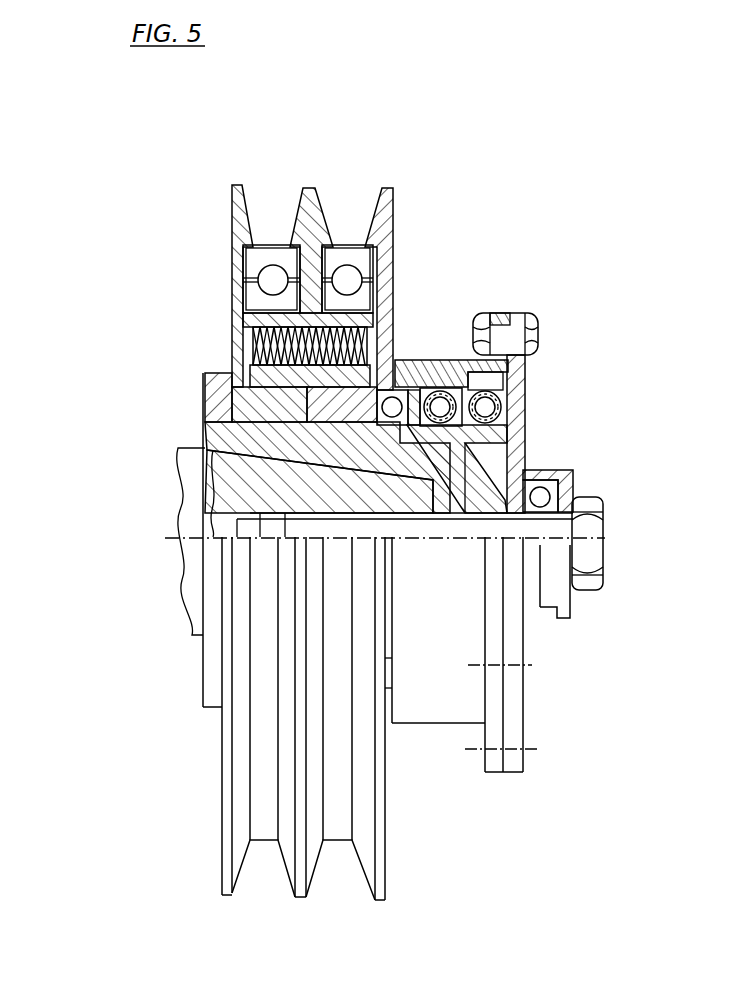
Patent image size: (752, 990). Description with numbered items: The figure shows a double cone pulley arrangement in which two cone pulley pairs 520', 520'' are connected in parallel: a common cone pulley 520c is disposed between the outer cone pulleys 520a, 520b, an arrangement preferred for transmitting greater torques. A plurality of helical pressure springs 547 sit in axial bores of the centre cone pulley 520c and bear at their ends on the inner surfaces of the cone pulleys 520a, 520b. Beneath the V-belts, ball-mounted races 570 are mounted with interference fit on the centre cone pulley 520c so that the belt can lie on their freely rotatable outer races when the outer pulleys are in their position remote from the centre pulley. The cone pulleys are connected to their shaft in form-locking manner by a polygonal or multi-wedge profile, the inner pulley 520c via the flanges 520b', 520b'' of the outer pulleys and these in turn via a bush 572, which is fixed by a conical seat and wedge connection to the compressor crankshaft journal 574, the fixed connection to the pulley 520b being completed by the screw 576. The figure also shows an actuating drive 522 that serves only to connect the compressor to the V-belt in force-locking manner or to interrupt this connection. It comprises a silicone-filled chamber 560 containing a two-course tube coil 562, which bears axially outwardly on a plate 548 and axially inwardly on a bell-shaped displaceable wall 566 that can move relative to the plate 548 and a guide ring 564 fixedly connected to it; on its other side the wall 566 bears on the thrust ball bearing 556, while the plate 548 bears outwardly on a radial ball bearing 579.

The cone pulley pair 520' is at (252, 155).
The common cone pulley 520c is at (312, 193).
The cone pulley pair 520'' is at (381, 155).
The outer cone pulley 520b is at (151, 278).
The outer cone pulley 520a is at (392, 200).
The thrust ball bearing 556 is at (398, 379).
The guide ring 564 is at (413, 372).
The actuating drive 522 is at (582, 316).
The ball-mounted races 570 is at (250, 295).
The helical pressure springs 547 is at (250, 348).
The plate 548 is at (520, 382).
The flange 520b' is at (175, 397).
The flange 520b'' is at (210, 414).
The two-course tube coil 562 is at (500, 404).
The chamber 560 is at (492, 442).
The bush 572 is at (262, 447).
The bell-shaped displaceable wall 566 is at (487, 482).
The compressor crankshaft journal 574 is at (243, 495).
The bearing 579 is at (553, 505).
The screw 576 is at (590, 538).